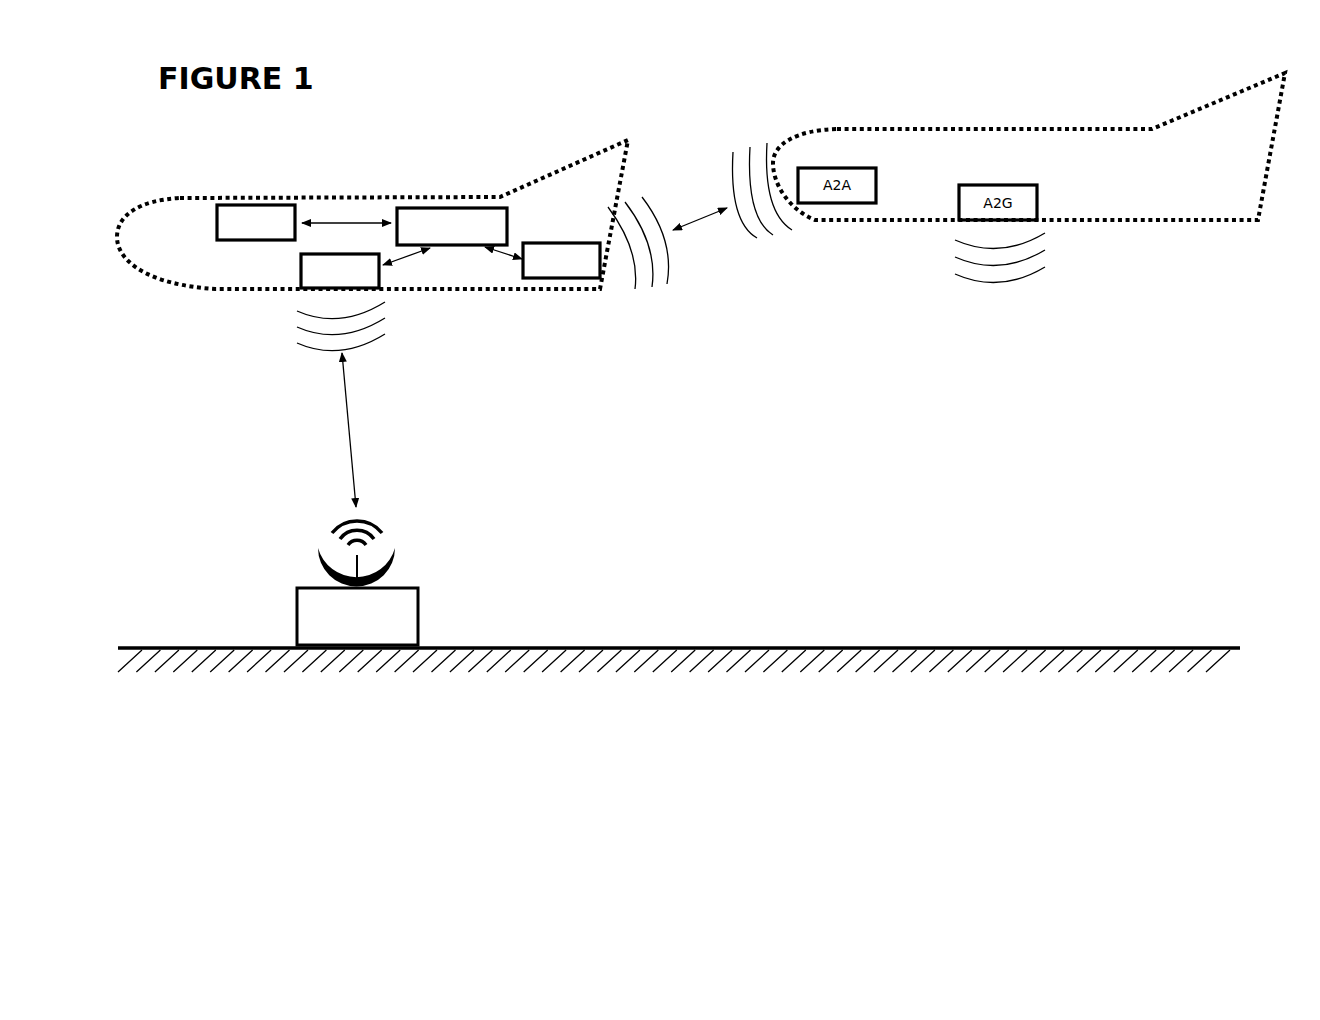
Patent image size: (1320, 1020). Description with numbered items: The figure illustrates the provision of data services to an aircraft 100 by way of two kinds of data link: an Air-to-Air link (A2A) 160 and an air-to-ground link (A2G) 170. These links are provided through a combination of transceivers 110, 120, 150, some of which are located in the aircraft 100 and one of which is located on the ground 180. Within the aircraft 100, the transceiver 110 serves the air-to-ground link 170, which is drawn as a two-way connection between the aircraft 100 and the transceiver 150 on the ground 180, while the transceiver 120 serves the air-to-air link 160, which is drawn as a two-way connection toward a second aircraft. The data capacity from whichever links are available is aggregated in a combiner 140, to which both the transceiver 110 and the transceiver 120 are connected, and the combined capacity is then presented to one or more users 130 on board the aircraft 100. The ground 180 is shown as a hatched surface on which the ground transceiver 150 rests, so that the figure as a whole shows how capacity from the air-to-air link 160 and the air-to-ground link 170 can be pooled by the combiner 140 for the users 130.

The aircraft 100 is at (372, 202).
The transceiver 110 is at (317, 271).
The transceiver 120 is at (561, 249).
The users 130 is at (232, 222).
The combiner 140 is at (452, 210).
The transceiver 150 is at (331, 583).
The Air-to-Air link (A2A) 160 is at (700, 216).
The air-to-ground link (A2G) 170 is at (341, 404).
The ground 180 is at (679, 645).